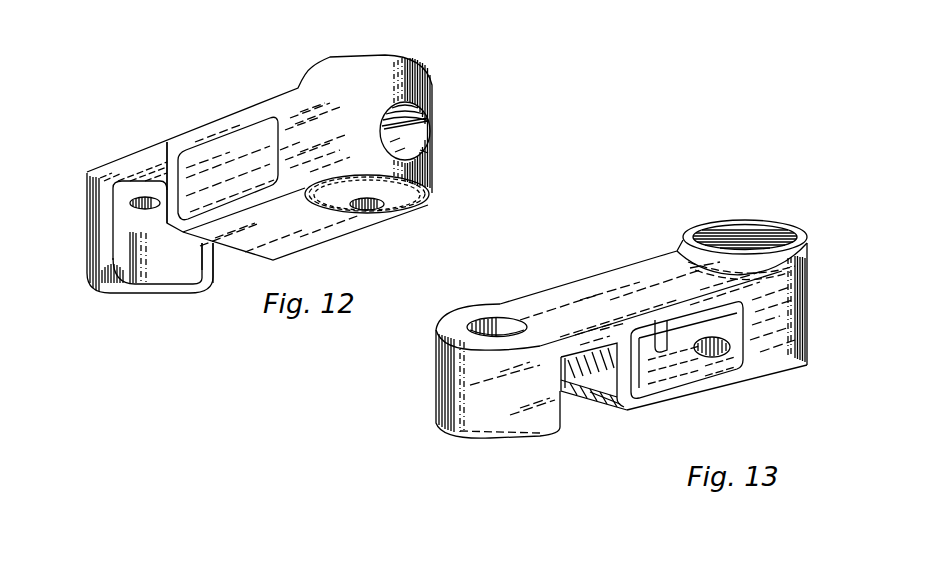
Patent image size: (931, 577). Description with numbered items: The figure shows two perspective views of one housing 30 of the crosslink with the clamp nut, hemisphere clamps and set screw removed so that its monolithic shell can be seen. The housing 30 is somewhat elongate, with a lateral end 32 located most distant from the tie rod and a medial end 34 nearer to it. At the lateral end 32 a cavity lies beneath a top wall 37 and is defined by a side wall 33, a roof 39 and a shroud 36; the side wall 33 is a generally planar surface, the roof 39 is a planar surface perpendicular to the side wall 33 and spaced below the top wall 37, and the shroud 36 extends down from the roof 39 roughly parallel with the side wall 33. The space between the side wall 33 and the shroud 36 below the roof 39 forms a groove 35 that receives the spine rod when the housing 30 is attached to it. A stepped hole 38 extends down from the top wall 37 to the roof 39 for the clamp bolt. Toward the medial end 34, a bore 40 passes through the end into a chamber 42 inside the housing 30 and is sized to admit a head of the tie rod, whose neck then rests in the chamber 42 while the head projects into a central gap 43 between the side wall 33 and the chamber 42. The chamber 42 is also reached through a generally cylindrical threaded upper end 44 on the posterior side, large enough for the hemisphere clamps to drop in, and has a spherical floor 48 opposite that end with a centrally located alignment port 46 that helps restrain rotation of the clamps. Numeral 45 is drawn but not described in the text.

In FIG. 12, the housing 30 is at (217, 95).
In FIG. 13, the housing 30 is at (585, 236).
In FIG. 12, the lateral end 32 is at (88, 240).
In FIG. 13, the lateral end 32 is at (437, 375).
In FIG. 12, the side wall 33 is at (147, 180).
In FIG. 13, the side wall 33 is at (596, 394).
In FIG. 12, the medial end 34 is at (403, 70).
In FIG. 13, the medial end 34 is at (808, 305).
In FIG. 12, the groove 35 is at (226, 268).
In FIG. 13, the groove 35 is at (610, 419).
In FIG. 12, the shroud 36 is at (137, 284).
In FIG. 13, the shroud 36 is at (502, 420).
In FIG. 12, the top wall 37 is at (164, 146).
In FIG. 13, the top wall 37 is at (598, 285).
In FIG. 12, the stepped hole 38 is at (131, 203).
In FIG. 13, the stepped hole 38 is at (487, 319).
In FIG. 12, the roof 39 is at (137, 177).
In FIG. 13, the roof 39 is at (594, 377).
In FIG. 12, the bore 40 is at (420, 143).
In FIG. 13, the chamber 42 is at (728, 228).
In FIG. 12, the central gap 43 is at (258, 136).
In FIG. 13, the central gap 43 is at (682, 374).
In FIG. 12, the threaded upper end 44 is at (428, 120).
In FIG. 13, the threaded upper end 44 is at (755, 232).
In FIG. 12, the opening edge 45 is at (428, 153).
In FIG. 12, the alignment port 46 is at (375, 209).
In FIG. 13, the spherical floor 48 is at (712, 361).